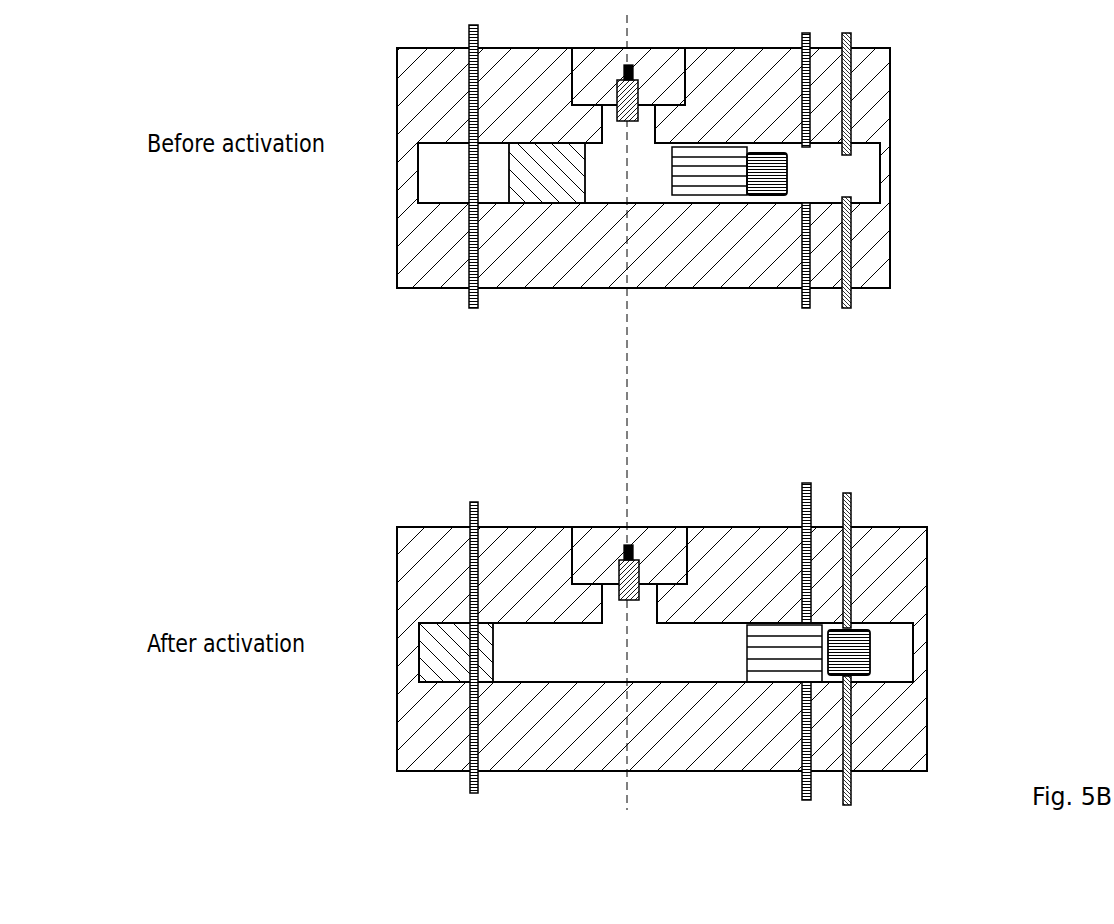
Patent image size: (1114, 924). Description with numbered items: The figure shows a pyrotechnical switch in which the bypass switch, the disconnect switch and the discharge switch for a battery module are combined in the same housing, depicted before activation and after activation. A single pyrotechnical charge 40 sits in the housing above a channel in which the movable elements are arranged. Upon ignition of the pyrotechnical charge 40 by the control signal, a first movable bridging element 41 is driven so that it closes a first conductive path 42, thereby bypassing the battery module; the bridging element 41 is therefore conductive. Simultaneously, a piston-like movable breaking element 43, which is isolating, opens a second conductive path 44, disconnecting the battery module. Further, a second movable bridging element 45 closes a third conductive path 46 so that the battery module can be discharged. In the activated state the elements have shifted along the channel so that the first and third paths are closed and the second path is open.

The pyrotechnical charge 40 is at (637, 103).
The first movable bridging element 41 is at (700, 193).
The first conductive path 42 is at (807, 203).
The movable breaking element 43 is at (542, 201).
The second conductive path 44 is at (469, 252).
The second movable bridging element 45 is at (762, 185).
The third conductive path 46 is at (850, 133).